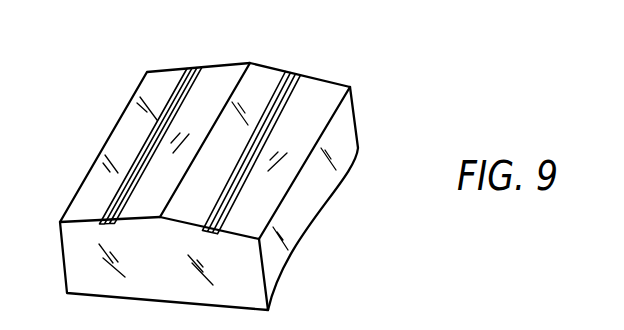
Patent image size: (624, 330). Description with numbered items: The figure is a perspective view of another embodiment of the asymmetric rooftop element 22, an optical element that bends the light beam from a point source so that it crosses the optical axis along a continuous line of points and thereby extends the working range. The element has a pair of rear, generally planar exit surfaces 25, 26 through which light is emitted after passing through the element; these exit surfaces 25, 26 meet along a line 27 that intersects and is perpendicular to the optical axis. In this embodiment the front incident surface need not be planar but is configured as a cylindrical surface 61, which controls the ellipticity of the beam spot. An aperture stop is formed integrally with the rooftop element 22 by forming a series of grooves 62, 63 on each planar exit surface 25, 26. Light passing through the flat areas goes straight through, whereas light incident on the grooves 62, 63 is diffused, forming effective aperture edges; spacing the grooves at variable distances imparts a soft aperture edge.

The rooftop element 22 is at (83, 185).
The exit surface 25 is at (310, 124).
The exit surface 26 is at (137, 118).
The line 27 is at (245, 71).
The cylindrical surface 61 is at (300, 233).
The grooves 62 is at (305, 91).
The grooves 63 is at (199, 89).